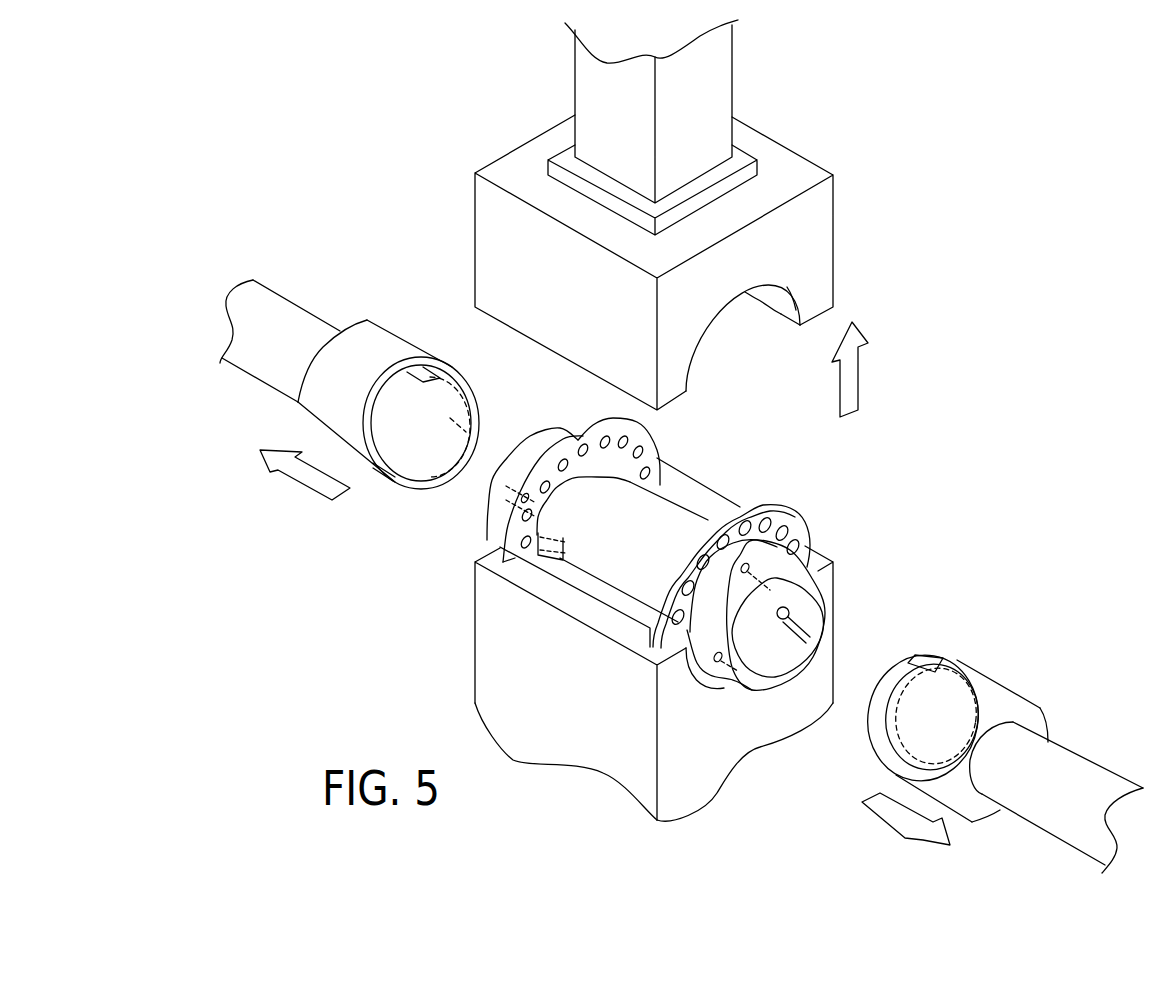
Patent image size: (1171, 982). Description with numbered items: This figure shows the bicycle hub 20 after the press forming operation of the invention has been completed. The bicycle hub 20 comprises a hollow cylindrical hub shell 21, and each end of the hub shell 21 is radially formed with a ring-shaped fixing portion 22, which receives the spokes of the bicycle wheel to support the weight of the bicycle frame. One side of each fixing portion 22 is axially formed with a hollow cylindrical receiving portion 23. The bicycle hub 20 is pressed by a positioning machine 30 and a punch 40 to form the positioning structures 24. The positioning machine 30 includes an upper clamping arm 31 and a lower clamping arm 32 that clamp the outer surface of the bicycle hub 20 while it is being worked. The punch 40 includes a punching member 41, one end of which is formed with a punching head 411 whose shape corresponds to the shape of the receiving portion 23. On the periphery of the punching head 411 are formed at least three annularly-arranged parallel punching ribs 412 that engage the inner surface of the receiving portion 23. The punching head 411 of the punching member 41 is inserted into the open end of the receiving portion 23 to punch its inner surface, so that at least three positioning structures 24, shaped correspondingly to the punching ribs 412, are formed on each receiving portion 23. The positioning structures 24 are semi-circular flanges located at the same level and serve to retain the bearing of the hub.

The bicycle hub 20 is at (672, 473).
The hub shell 21 is at (685, 518).
The fixing portion 22 is at (775, 522).
The receiving portion 23 is at (803, 573).
The positioning structure 24 is at (788, 610).
The positioning machine 30 is at (782, 118).
The upper clamping arm 31 is at (813, 235).
The lower clamping arm 32 is at (738, 735).
The punch 40 is at (1042, 660).
The punching member 41 is at (975, 808).
The punching head 411 is at (923, 655).
The punching rib 412 is at (908, 662).